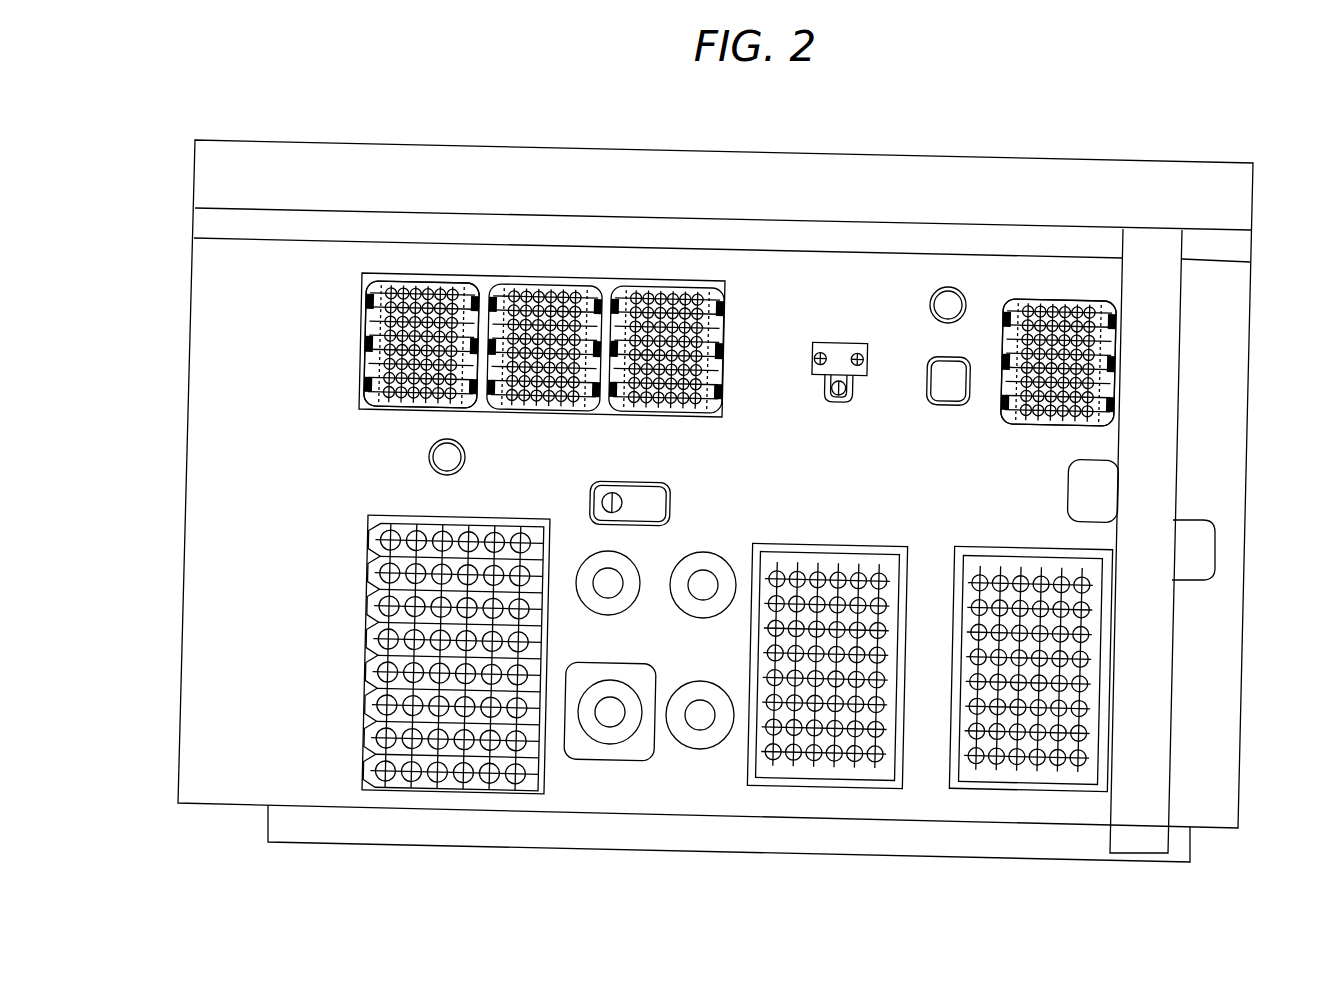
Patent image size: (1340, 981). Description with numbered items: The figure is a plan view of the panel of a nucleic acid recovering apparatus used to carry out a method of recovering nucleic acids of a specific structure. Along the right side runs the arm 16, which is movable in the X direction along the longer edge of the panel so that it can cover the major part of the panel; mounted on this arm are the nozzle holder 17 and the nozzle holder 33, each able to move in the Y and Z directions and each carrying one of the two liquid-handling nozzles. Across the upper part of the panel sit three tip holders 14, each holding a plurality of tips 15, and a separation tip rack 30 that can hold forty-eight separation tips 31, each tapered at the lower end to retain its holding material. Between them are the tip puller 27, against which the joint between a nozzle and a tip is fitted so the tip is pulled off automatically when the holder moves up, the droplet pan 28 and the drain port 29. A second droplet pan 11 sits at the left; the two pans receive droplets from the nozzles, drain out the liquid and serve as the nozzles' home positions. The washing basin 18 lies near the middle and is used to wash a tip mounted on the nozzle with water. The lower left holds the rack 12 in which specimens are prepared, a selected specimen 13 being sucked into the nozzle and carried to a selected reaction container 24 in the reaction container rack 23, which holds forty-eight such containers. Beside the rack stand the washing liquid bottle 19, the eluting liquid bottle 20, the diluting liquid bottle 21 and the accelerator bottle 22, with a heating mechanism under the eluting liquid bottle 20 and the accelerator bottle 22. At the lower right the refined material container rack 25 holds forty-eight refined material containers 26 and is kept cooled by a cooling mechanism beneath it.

The droplet pan 11 is at (425, 456).
The rack 12 is at (453, 783).
The specimen 13 is at (370, 783).
The tip holder 14 is at (434, 285).
The tip 15 is at (386, 285).
The arm 16 is at (1136, 840).
The nozzle holder 17 is at (1217, 548).
The washing basin 18 is at (672, 488).
The washing liquid bottle 19 is at (610, 755).
The eluting liquid bottle 20 is at (590, 615).
The diluting liquid bottle 21 is at (695, 752).
The accelerator bottle 22 is at (715, 618).
The reaction container rack 23 is at (768, 760).
The reaction container 24 is at (883, 770).
The refined material container rack 25 is at (1088, 773).
The refined material container 26 is at (972, 768).
The tip puller 27 is at (834, 343).
The droplet pan 28 is at (948, 287).
The drain port 29 is at (926, 357).
The separation tip rack 30 is at (1082, 302).
The separation tip 31 is at (1030, 302).
The nozzle holder 33 is at (1095, 490).